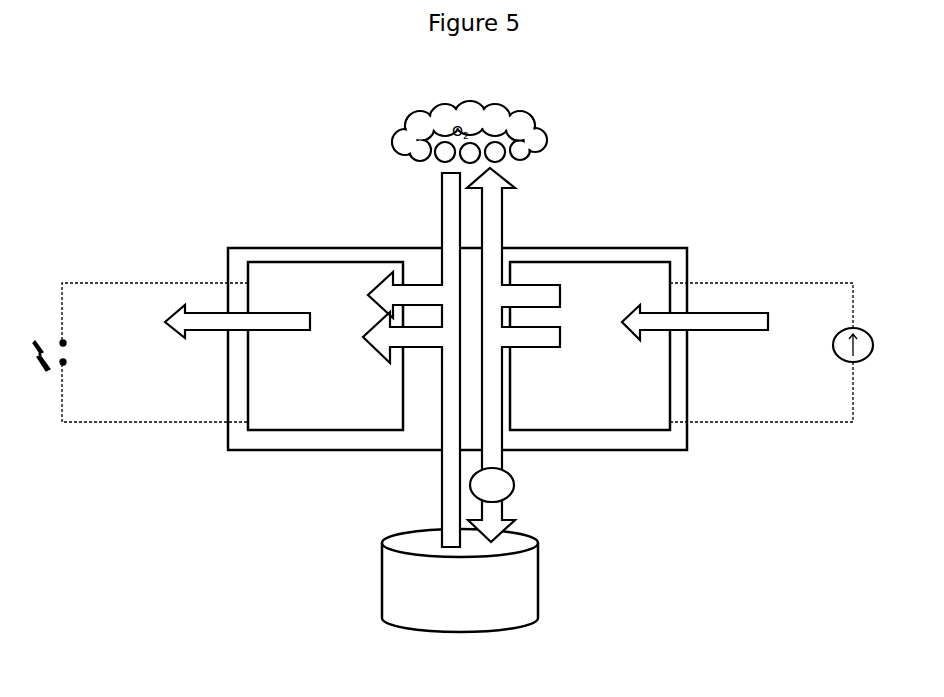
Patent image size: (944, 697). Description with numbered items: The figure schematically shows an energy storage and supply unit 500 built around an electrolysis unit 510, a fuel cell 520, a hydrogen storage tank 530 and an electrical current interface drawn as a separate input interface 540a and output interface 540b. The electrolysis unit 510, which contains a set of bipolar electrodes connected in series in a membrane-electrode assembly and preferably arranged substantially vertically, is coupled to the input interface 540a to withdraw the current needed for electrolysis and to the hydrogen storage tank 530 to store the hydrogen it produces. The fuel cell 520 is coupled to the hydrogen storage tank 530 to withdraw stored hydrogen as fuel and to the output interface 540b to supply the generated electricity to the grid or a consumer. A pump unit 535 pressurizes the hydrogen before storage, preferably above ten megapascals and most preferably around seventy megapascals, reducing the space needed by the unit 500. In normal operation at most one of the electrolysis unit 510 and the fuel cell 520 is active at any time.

The energy storage and supply unit 500 is at (673, 455).
The electrolysis unit 510 is at (592, 295).
The fuel cell 520 is at (335, 297).
The hydrogen storage tank 530 is at (527, 597).
The pump unit 535 is at (512, 502).
The input interface 540a is at (833, 349).
The output interface 540b is at (77, 355).